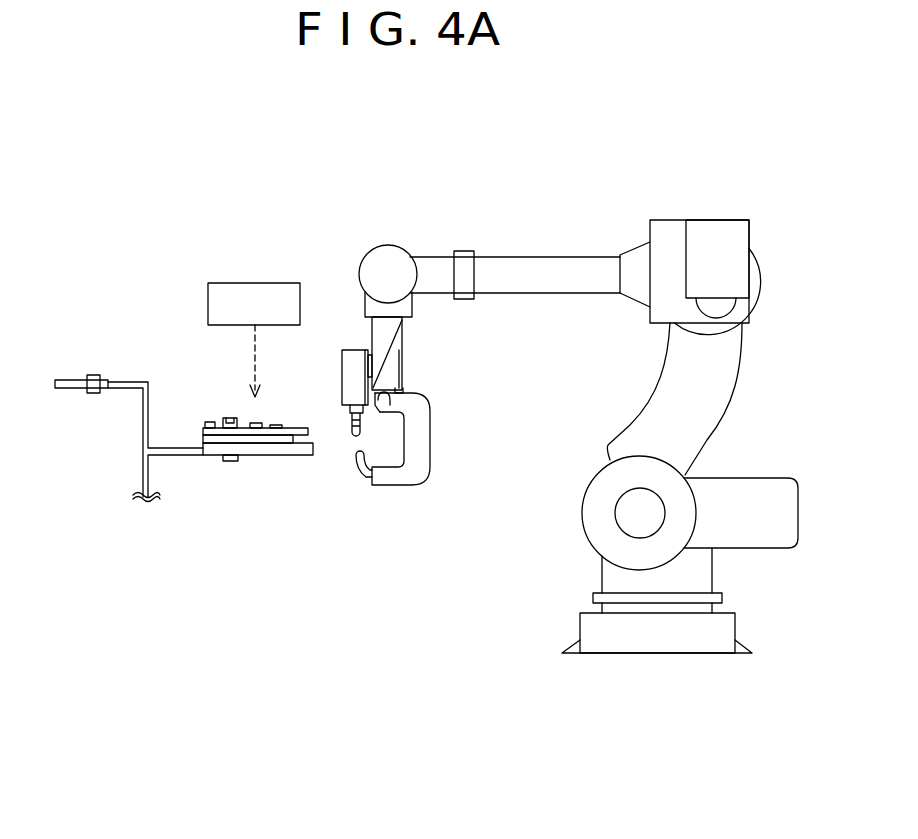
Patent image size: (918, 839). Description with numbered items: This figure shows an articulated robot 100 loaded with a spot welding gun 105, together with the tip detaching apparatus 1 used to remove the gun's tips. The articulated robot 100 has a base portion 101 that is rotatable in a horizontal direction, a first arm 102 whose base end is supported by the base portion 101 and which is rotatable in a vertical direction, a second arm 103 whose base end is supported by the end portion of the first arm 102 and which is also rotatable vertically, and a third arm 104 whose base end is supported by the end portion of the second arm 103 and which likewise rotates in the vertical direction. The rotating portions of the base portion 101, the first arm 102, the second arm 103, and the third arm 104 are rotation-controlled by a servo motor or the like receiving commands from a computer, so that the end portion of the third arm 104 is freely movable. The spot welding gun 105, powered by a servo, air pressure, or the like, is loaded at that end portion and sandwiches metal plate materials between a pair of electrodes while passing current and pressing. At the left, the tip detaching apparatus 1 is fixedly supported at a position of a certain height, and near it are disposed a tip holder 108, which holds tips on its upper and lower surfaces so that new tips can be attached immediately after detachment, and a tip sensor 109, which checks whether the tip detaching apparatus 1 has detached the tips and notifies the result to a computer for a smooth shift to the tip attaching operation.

The articulated robot 100 is at (788, 254).
The base portion 101 is at (700, 575).
The first arm 102 is at (718, 407).
The second arm 103 is at (548, 262).
The third arm 104 is at (385, 334).
The spot welding gun 105 is at (416, 448).
The tip holder 108 is at (97, 375).
The tip sensor 109 is at (255, 283).
The tip detaching apparatus 1 is at (282, 411).